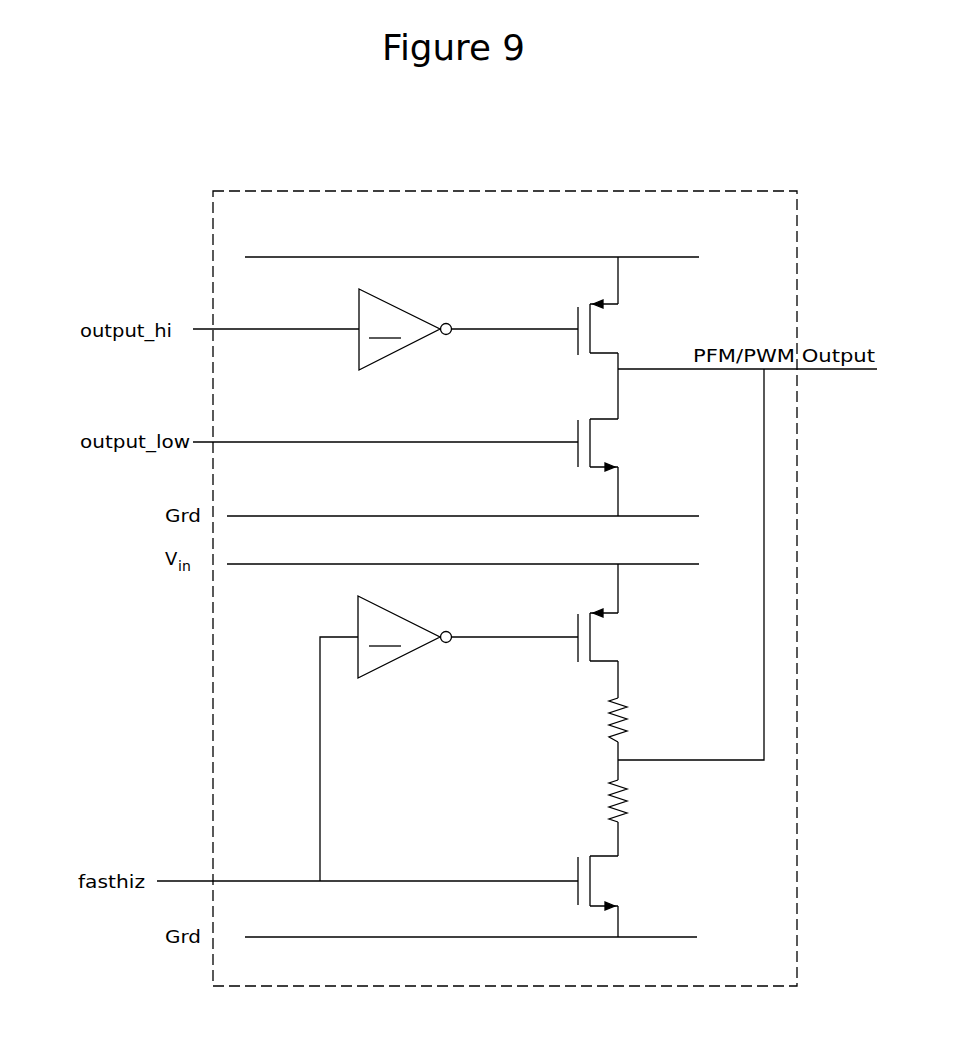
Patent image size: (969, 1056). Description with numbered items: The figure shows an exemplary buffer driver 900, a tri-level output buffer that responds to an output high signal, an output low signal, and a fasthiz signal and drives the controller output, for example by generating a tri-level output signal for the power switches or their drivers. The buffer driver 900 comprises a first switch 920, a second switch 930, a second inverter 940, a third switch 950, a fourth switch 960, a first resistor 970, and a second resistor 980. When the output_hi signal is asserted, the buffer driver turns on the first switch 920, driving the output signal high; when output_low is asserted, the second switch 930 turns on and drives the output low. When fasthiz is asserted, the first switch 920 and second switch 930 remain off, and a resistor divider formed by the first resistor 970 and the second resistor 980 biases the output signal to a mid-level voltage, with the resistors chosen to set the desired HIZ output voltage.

The buffer driver 900 is at (302, 191).
The first switch 920 is at (568, 322).
The second switch 930 is at (570, 436).
The second inverter 940 is at (468, 637).
The third switch 950 is at (568, 629).
The fourth switch 960 is at (570, 872).
The first resistor 970 is at (628, 728).
The second resistor 980 is at (628, 805).